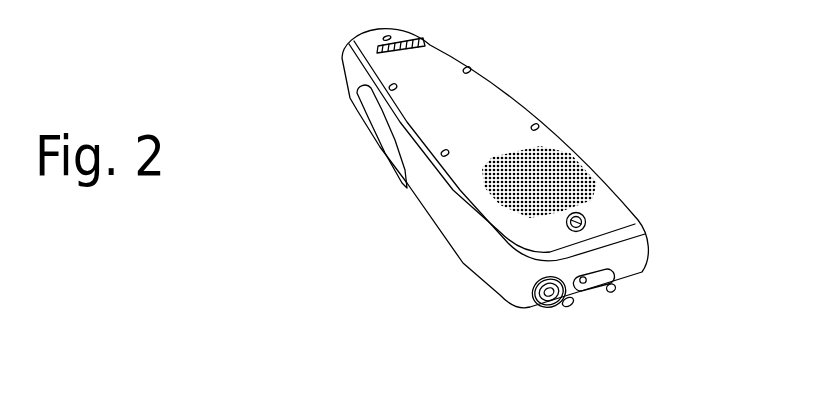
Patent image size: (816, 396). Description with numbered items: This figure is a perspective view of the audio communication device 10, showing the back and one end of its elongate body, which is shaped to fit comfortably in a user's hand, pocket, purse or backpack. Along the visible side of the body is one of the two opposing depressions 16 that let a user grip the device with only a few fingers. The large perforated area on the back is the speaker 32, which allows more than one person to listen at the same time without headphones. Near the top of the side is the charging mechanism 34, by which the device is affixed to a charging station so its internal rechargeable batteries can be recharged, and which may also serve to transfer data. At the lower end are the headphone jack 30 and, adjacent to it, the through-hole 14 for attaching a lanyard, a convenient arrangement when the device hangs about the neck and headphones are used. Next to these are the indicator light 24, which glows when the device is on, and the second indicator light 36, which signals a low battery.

The audio communication device 10 is at (257, 214).
The through-hole 14 is at (607, 272).
The depression 16 is at (379, 135).
The indicator light 24 is at (614, 291).
The headphone jack 30 is at (543, 306).
The speaker 32 is at (507, 194).
The charging mechanism 34 is at (379, 52).
The second indicator light 36 is at (572, 305).